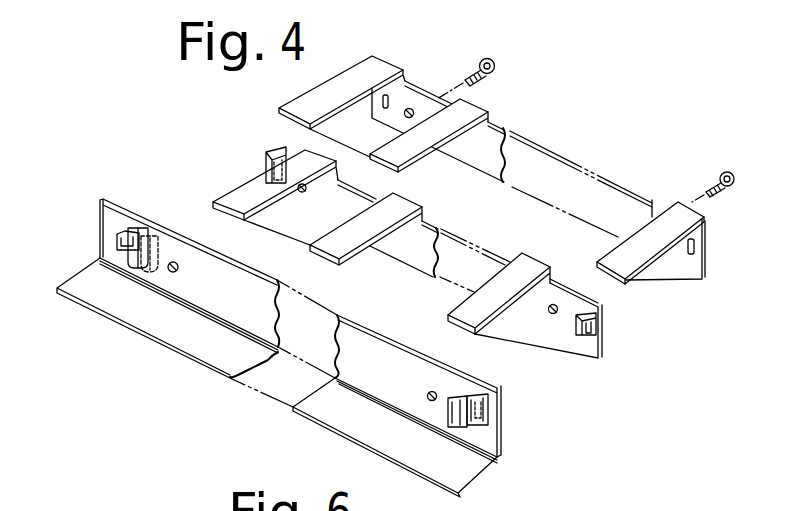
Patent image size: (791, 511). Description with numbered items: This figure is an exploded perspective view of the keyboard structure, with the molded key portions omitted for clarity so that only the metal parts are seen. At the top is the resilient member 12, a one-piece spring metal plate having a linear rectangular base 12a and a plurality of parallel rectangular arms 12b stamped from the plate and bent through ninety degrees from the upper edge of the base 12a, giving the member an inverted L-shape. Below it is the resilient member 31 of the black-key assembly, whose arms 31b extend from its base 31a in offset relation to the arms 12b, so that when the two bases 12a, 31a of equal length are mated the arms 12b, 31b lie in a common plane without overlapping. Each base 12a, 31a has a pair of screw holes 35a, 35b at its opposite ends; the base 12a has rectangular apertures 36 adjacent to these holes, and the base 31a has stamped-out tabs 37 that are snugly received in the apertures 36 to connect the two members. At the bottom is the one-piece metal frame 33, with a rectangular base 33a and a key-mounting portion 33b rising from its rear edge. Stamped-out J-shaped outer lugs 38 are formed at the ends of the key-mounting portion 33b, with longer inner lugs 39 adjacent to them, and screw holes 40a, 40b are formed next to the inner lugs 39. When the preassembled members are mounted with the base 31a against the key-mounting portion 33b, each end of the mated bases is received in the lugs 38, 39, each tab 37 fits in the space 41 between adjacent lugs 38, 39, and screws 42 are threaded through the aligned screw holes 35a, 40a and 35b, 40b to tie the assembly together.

The resilient member 12 is at (492, 170).
The base 12a is at (510, 167).
The arms 12b is at (408, 152).
The resilient member 31 is at (401, 251).
The base 31a is at (415, 254).
The arms 31b is at (248, 186).
The frame 33 is at (309, 355).
The base 33a is at (470, 484).
The key-mounting portion 33b is at (268, 322).
The screw hole 35a is at (412, 109).
The screw hole 35b is at (675, 244).
The rectangular apertures 36 is at (381, 103).
The stamped-out tabs 37 is at (265, 152).
The outer lugs 38 is at (134, 232).
The inner lugs 39 is at (148, 236).
The screw hole 40a is at (178, 270).
The screw hole 40b is at (432, 392).
The space 41 is at (132, 226).
The screws 42 is at (496, 69).